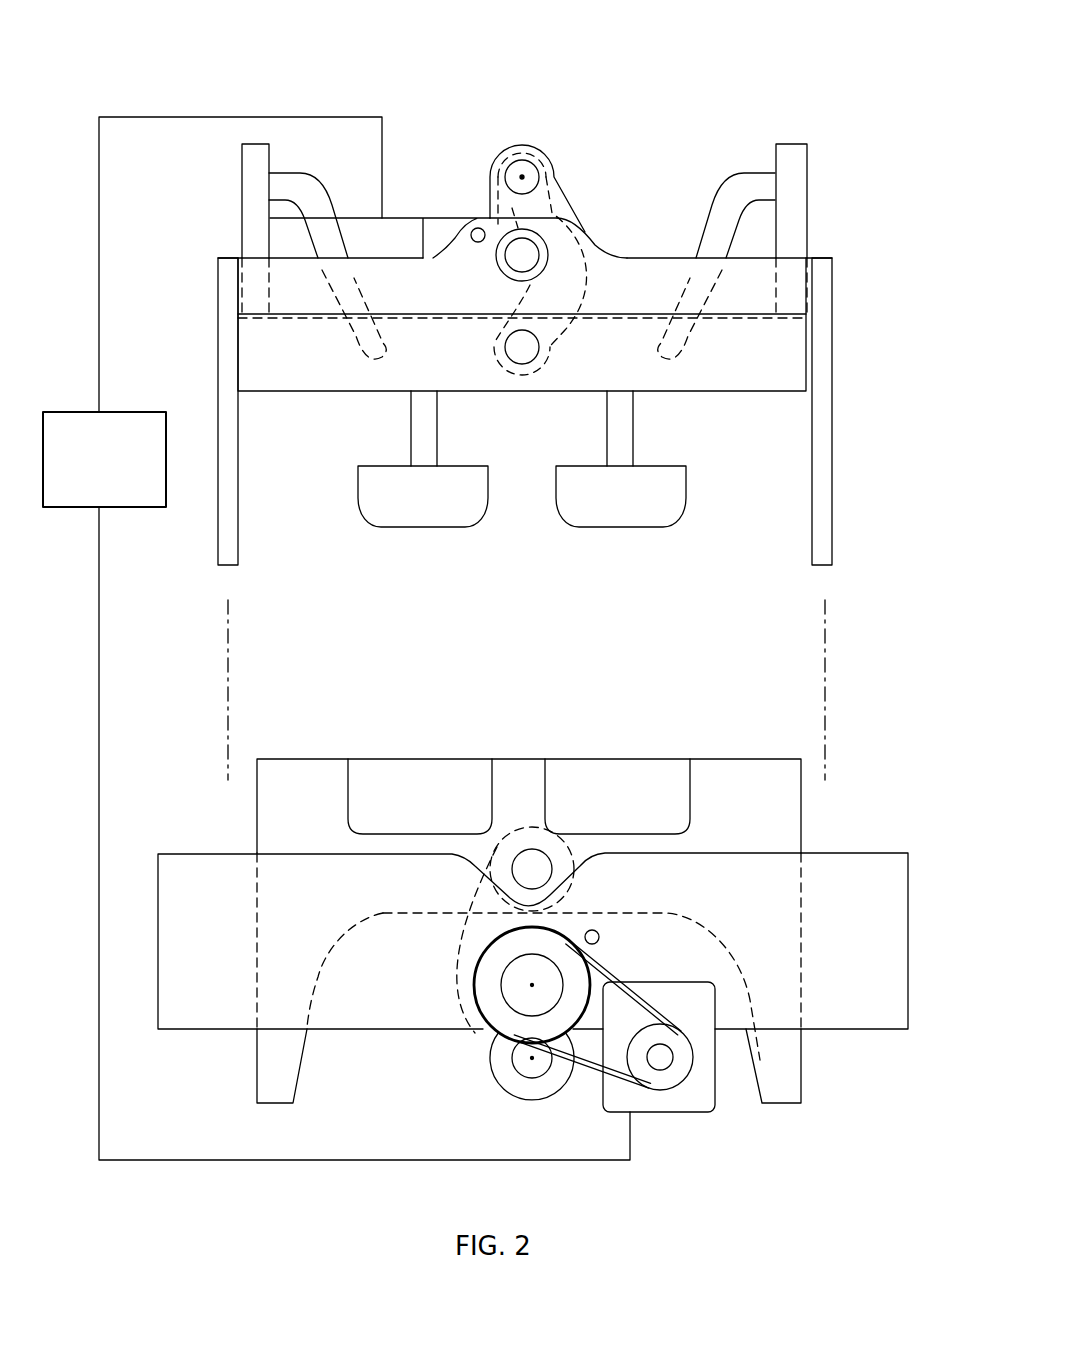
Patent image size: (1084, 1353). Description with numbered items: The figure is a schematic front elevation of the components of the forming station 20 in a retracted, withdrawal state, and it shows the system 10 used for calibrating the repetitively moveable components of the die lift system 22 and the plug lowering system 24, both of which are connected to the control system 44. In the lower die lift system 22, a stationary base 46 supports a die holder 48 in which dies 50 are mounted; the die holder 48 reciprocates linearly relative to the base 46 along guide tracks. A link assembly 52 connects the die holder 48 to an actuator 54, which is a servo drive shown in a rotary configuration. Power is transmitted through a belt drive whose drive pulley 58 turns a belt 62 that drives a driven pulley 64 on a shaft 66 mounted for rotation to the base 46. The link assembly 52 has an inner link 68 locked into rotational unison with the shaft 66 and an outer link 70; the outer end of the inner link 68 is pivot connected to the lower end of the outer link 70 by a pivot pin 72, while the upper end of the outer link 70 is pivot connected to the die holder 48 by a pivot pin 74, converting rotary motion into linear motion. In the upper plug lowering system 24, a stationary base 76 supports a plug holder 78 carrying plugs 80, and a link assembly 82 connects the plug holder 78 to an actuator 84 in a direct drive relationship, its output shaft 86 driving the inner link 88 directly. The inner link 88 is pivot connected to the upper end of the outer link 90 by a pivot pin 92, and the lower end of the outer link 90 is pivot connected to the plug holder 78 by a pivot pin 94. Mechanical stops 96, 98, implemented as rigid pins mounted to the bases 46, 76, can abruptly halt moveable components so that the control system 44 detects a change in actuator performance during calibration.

The system 10 is at (855, 120).
The forming station 20 is at (893, 553).
The die lift system 22 is at (857, 840).
The plug lowering system 24 is at (868, 173).
The control system 44 is at (104, 459).
The base 46 is at (875, 971).
The die holder 48 is at (768, 785).
The dies 50 is at (396, 775).
The link assembly 52 is at (400, 1093).
The actuator 54 is at (716, 1078).
The drive pulley 58 is at (680, 1028).
The belt 62 is at (622, 982).
The driven pulley 64 is at (617, 982).
The shaft 66 is at (827, 925).
The inner link 68 is at (518, 1078).
The outer link 70 is at (470, 937).
The pivot pin 72 is at (533, 1063).
The pivot pin 74 is at (532, 870).
The base 76 is at (825, 330).
The plug holder 78 is at (777, 358).
The plugs 80 is at (458, 498).
The link assembly 82 is at (519, 93).
The actuator 84 is at (388, 218).
The output shaft 86 is at (510, 264).
The inner link 88 is at (527, 145).
The outer link 90 is at (557, 188).
The pivot pin 92 is at (527, 178).
The pivot pin 94 is at (523, 352).
The mechanical stop 96 is at (592, 930).
The mechanical stop 98 is at (487, 230).